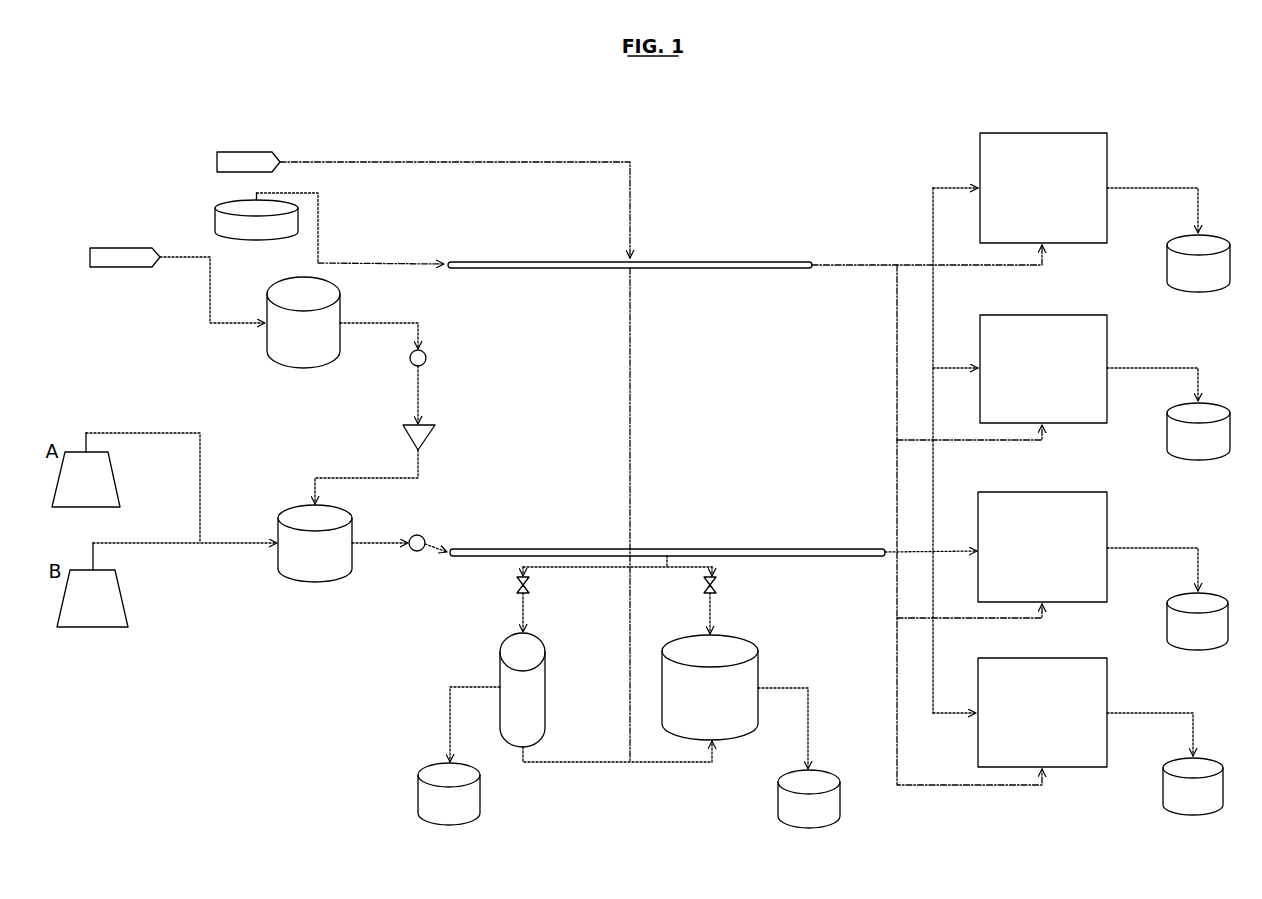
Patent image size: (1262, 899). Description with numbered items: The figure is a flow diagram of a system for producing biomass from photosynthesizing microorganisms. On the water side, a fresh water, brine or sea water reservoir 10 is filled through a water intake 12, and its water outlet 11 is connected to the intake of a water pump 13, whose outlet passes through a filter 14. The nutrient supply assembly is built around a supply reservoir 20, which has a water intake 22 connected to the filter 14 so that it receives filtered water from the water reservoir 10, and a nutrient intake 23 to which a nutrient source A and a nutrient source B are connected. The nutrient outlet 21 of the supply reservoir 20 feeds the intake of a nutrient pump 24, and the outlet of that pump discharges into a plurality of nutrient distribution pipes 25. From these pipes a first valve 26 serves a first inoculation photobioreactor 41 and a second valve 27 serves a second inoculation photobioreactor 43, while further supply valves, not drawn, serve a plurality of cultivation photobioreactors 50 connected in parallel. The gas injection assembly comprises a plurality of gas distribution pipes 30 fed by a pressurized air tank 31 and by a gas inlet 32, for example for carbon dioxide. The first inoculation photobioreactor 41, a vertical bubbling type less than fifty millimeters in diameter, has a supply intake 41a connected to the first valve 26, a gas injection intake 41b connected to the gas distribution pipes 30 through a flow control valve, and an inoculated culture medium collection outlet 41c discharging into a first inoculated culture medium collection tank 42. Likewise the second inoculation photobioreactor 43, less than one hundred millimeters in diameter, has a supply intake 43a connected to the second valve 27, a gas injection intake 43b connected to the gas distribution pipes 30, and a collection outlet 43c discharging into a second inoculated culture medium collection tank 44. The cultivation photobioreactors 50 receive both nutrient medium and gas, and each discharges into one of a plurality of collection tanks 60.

The water reservoir 10 is at (303, 337).
The water outlet 11 is at (379, 324).
The water intake 12 is at (177, 273).
The water pump 13 is at (432, 382).
The filter 14 is at (433, 437).
The supply reservoir 20 is at (315, 558).
The nutrient outlet 21 is at (380, 532).
The water intake 22 is at (349, 477).
The nutrient intake 23 is at (181, 503).
The nutrient pump 24 is at (426, 559).
The nutrient distribution pipes 25 is at (713, 538).
The first valve 26 is at (508, 580).
The second valve 27 is at (724, 580).
The gas distribution pipes 30 is at (742, 507).
The pressurized air tank 31 is at (329, 228).
The gas inlet 32 is at (423, 193).
The first inoculation photobioreactor 41 is at (536, 690).
The supply intake 41a is at (504, 613).
The gas injection intake 41b is at (475, 715).
The inoculated culture medium collection outlet 41c is at (598, 755).
The first inoculated culture medium collection tank 42 is at (456, 805).
The second inoculation photobioreactor 43 is at (723, 688).
The supply intake 43a is at (733, 614).
The gas injection intake 43b is at (783, 718).
The inoculated culture medium collection outlet 43c is at (691, 753).
The second inoculated culture medium collection tank 44 is at (821, 809).
The cultivation photobioreactors 50 is at (1021, 439).
The collection tanks 60 is at (1174, 501).